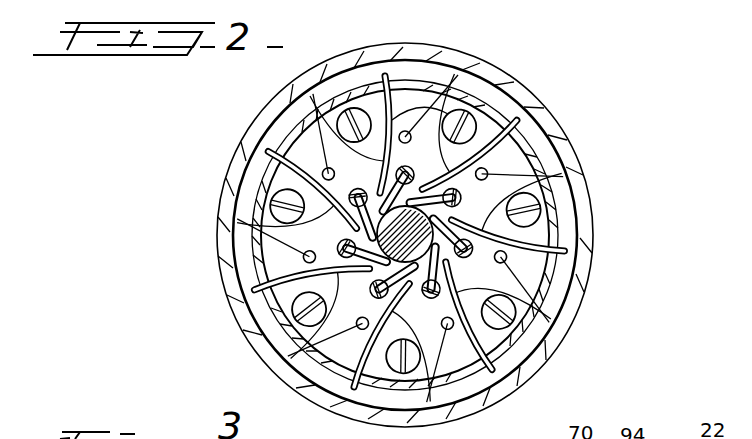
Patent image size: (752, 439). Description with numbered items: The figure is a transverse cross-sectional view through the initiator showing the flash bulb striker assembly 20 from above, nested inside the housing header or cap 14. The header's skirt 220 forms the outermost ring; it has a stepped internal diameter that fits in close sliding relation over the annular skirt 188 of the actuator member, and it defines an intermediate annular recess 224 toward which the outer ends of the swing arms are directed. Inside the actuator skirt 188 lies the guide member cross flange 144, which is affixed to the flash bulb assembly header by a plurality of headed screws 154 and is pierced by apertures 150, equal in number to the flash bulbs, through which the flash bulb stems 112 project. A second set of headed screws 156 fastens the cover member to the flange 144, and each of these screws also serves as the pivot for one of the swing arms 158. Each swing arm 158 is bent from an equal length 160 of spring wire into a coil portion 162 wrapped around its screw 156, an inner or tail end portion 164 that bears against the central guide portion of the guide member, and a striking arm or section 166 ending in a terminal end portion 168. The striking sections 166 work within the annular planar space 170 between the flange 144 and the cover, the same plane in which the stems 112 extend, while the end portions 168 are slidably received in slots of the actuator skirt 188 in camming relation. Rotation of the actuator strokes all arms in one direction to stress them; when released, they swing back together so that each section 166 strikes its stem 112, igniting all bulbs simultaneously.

The housing header or cap 14 is at (600, 218).
The striker assembly 20 is at (556, 312).
The flash bulb stem 112 is at (465, 86).
The cross flange 144 is at (262, 243).
The apertures 150 is at (268, 152).
The headed screws 154 is at (283, 201).
The headed screws 156 is at (313, 256).
The swing arms 158 is at (415, 96).
The length of spring wire 160 is at (372, 93).
The coil portion 162 is at (278, 178).
The inner or tail end portion 164 is at (192, 222).
The striking arm or section 166 is at (330, 166).
The terminal end portion 168 is at (262, 333).
The annular planar space 170 is at (340, 342).
The annular skirt 188 is at (323, 170).
The skirt 220 is at (262, 272).
The intermediate annular recess 224 is at (285, 344).